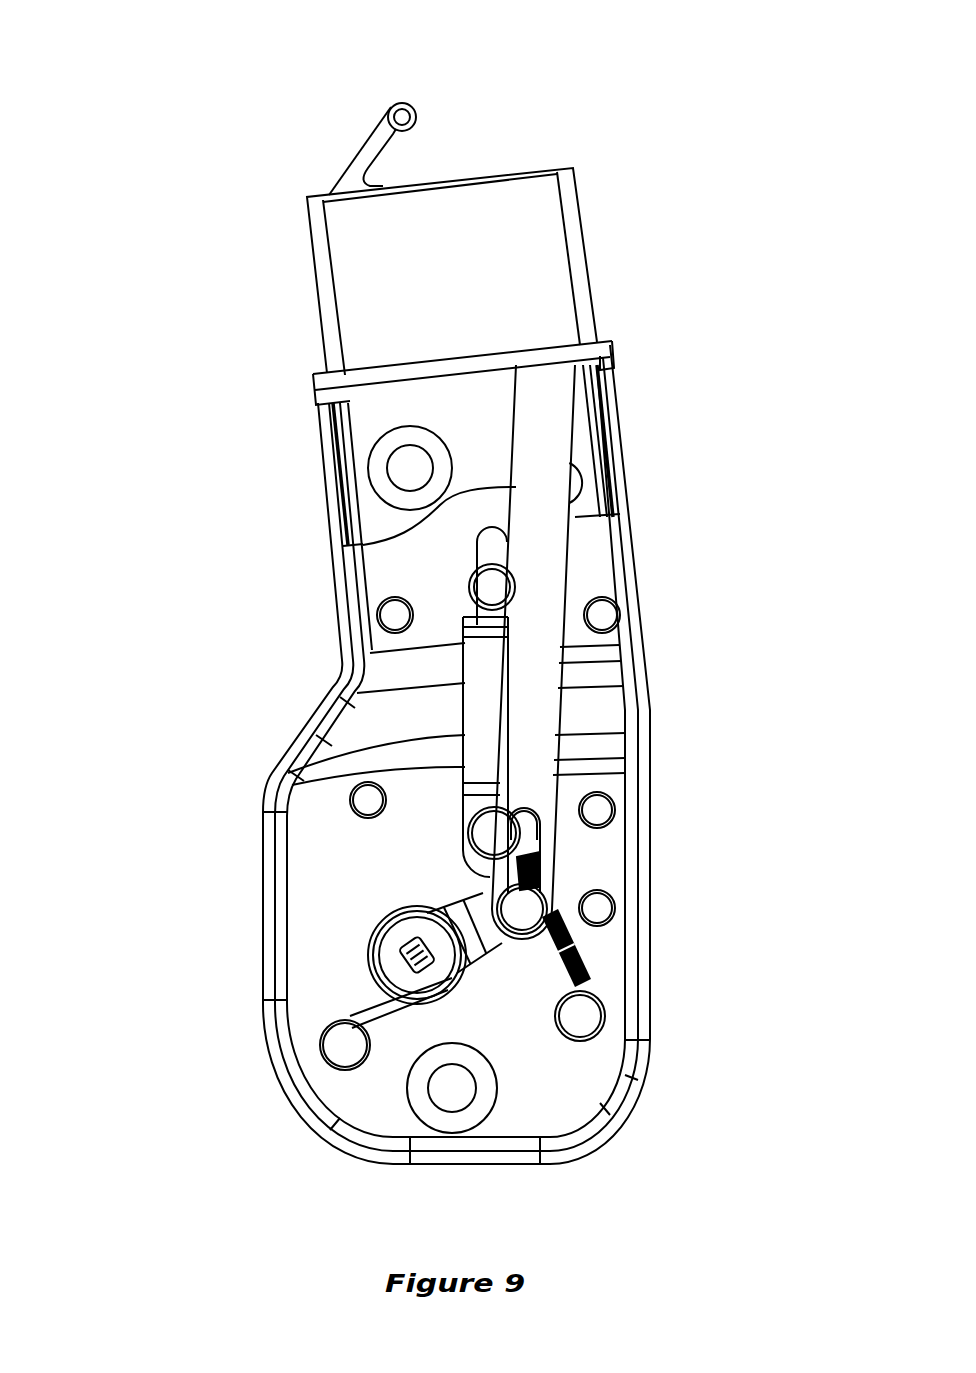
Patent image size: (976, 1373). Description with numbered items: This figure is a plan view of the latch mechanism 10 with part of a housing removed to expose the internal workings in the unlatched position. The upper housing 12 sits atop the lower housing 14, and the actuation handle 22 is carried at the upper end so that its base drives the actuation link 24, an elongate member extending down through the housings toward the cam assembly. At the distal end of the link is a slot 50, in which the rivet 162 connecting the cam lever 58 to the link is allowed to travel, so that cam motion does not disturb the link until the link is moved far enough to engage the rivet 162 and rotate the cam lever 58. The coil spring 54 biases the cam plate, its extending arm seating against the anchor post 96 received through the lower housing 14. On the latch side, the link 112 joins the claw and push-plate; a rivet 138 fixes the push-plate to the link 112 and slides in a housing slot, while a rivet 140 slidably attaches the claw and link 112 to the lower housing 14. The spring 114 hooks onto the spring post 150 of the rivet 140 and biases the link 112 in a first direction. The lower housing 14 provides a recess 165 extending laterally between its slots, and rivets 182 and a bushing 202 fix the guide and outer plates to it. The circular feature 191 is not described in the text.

The latch mechanism 10 is at (172, 64).
The upper housing 12 is at (584, 197).
The lower housing 14 is at (636, 467).
The actuation handle 22 is at (436, 97).
The actuation link 24 is at (551, 578).
The slot 50 is at (538, 833).
The coil spring 54 is at (361, 932).
The cam lever 58 is at (495, 974).
The anchor post 96 is at (345, 1045).
The link 112 is at (464, 713).
The spring 114 is at (590, 969).
The rivet 138 is at (482, 580).
The rivet 140 is at (486, 838).
The spring post 150 is at (580, 1016).
The rivet 162 is at (518, 925).
The recess 165 is at (608, 710).
The rivets 182 is at (395, 615).
The pivot hole 191 is at (410, 468).
The bushing 202 is at (452, 1090).